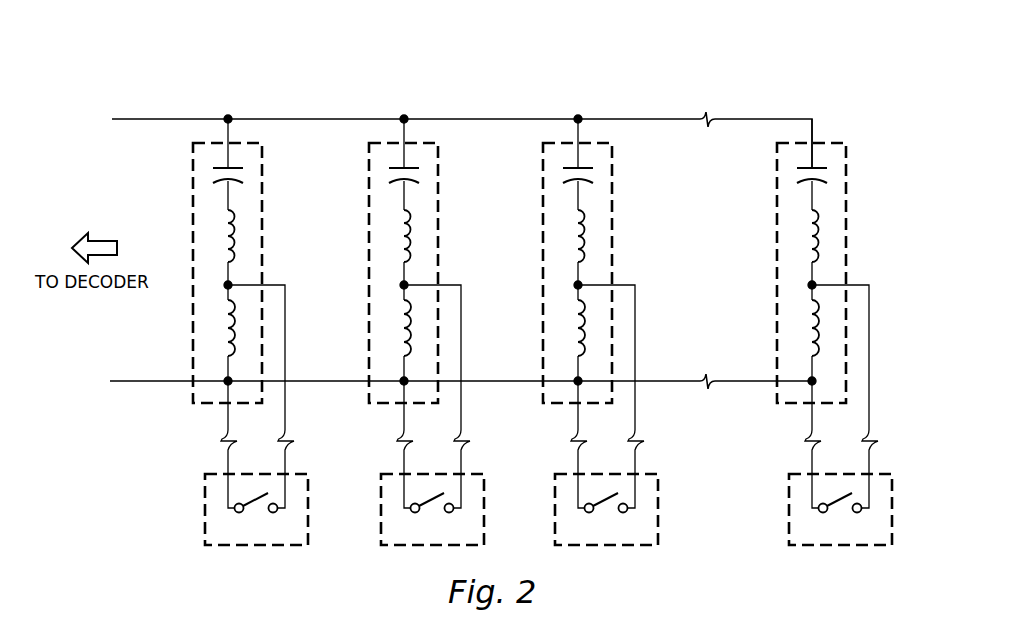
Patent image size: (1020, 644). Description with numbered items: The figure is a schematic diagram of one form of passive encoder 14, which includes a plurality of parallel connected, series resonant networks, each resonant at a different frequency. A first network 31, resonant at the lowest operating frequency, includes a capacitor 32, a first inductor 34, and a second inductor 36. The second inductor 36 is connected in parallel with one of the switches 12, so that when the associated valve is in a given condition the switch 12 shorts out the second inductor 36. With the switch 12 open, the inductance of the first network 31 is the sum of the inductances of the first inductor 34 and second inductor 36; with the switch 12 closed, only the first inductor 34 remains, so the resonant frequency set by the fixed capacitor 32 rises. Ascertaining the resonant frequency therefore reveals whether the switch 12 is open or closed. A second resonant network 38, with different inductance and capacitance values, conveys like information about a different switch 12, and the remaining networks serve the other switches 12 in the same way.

The switch 12 is at (205, 509).
The encoder 14 is at (472, 97).
The first network 31 is at (219, 259).
The capacitor 32 is at (236, 167).
The first inductor 34 is at (236, 240).
The second inductor 36 is at (228, 322).
The second resonant network 38 is at (440, 149).